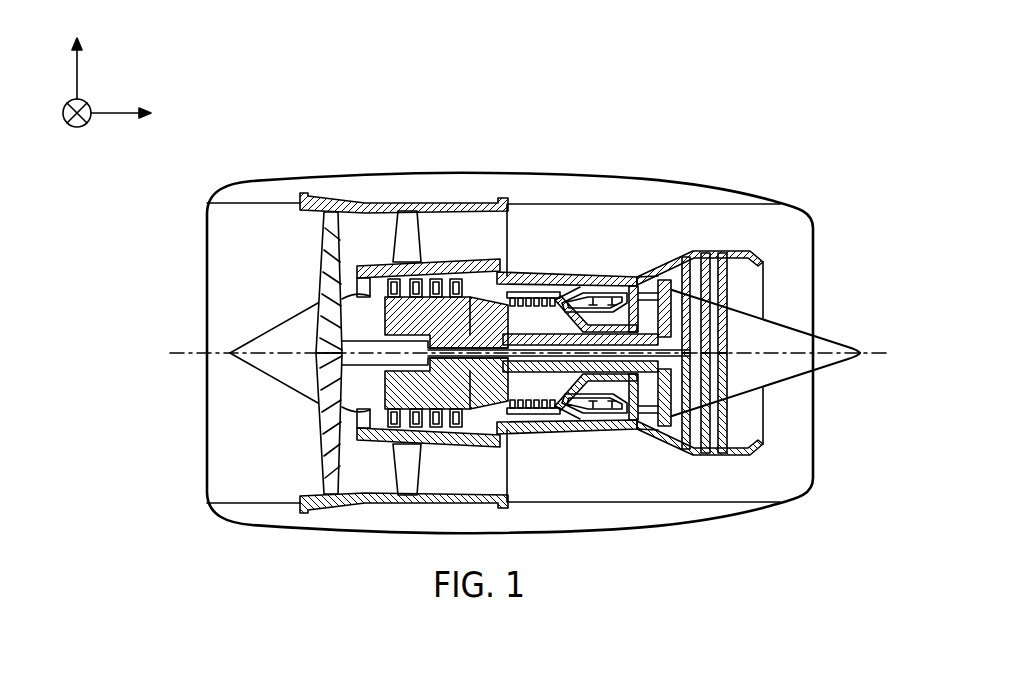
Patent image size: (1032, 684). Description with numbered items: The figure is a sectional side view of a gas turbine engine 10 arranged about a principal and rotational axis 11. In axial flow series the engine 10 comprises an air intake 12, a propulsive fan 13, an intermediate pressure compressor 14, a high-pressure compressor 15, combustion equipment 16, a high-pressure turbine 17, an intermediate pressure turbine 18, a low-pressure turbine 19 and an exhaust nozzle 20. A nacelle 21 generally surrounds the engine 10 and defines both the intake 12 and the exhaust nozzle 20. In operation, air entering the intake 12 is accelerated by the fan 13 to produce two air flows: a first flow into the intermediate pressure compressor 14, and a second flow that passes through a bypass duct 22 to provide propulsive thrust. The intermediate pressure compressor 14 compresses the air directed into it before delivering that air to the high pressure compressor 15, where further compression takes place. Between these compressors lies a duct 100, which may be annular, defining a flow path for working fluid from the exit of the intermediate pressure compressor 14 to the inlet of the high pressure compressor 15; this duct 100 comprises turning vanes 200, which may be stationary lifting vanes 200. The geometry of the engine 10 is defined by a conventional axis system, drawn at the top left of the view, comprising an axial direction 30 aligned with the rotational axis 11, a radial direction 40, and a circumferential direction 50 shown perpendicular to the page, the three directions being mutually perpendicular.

The gas turbine engine 10 is at (201, 209).
The principal and rotational axis 11 is at (190, 352).
The air intake 12 is at (265, 202).
The propulsive fan 13 is at (317, 455).
The intermediate pressure compressor 14 is at (430, 428).
The high-pressure compressor 15 is at (533, 297).
The combustion equipment 16 is at (600, 413).
The high-pressure turbine 17 is at (633, 423).
The intermediate pressure turbine 18 is at (667, 273).
The low-pressure turbine 19 is at (687, 443).
The exhaust nozzle 20 is at (816, 477).
The nacelle 21 is at (650, 177).
The bypass duct 22 is at (473, 251).
The duct 100 is at (508, 275).
The turning vanes 200 is at (530, 277).
The axial direction 30 is at (137, 114).
The radial direction 40 is at (77, 56).
The circumferential direction 50 is at (70, 131).